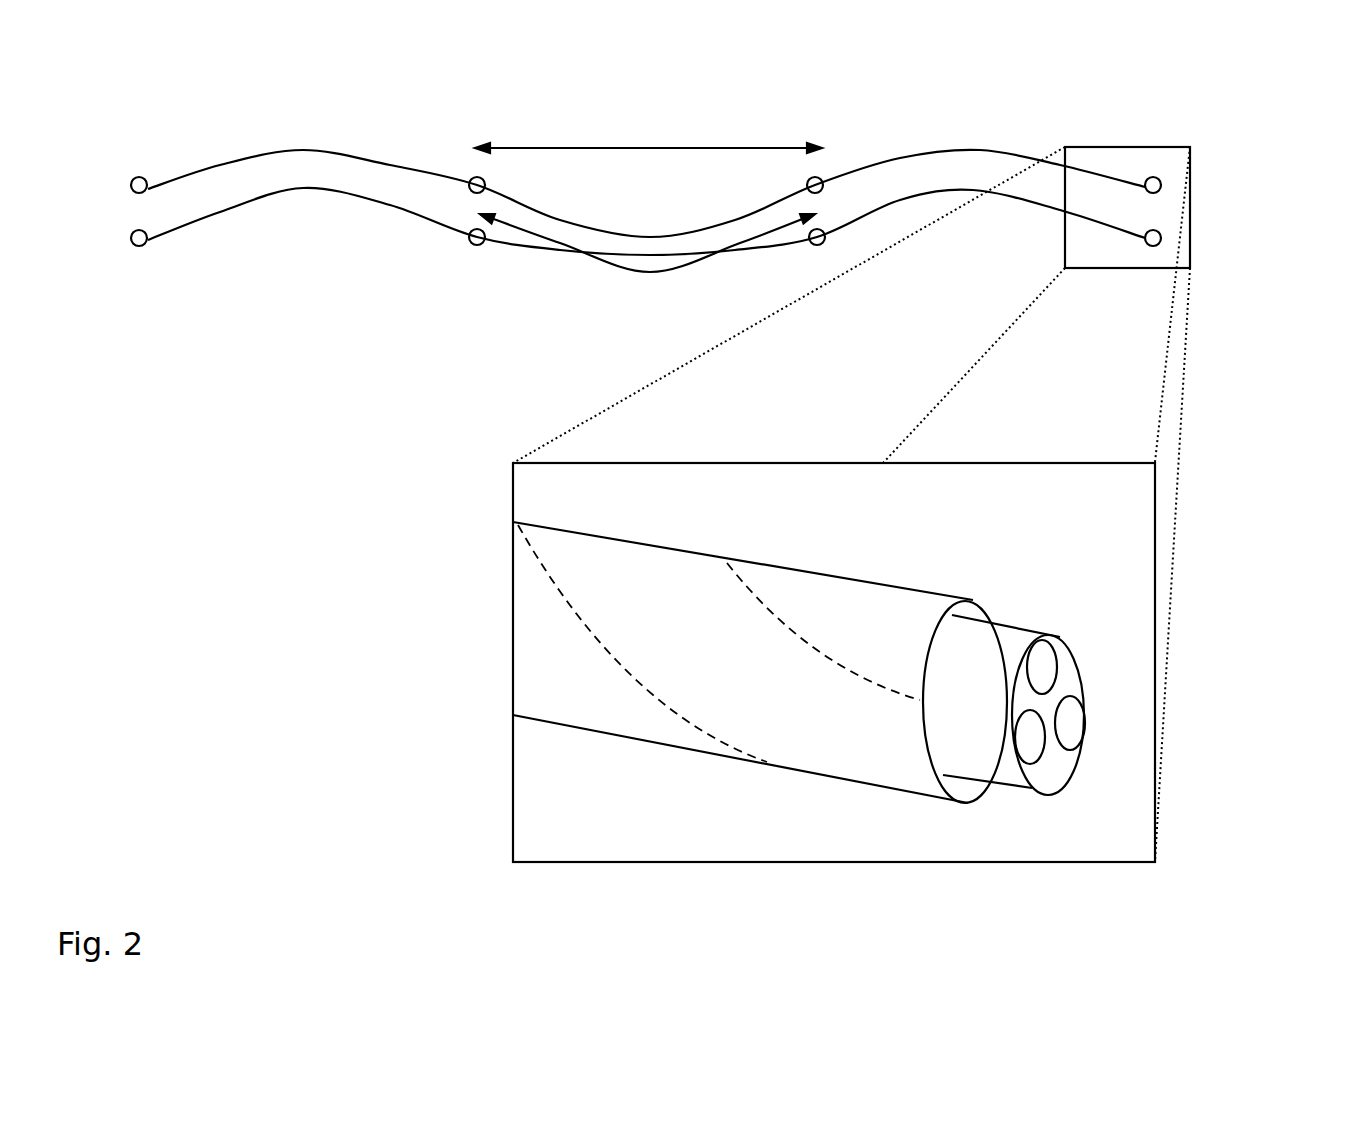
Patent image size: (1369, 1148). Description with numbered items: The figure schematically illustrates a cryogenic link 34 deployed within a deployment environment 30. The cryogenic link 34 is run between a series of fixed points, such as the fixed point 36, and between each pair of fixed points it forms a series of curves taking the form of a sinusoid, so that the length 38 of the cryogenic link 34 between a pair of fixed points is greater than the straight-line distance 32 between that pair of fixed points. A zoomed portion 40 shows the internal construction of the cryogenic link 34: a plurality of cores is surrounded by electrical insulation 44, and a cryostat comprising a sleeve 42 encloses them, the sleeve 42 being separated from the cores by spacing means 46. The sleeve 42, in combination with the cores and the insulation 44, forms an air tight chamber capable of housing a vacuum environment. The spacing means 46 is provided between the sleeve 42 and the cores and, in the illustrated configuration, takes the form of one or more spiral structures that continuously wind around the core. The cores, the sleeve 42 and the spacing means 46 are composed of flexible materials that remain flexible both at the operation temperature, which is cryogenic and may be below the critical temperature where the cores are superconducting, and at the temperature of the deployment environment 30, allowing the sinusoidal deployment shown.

The deployment environment 30 is at (1152, 78).
The distance 32 is at (660, 145).
The cryogenic link 34 is at (315, 150).
The fixed point 36 is at (820, 178).
The length 38 is at (540, 235).
The zoomed portion 40 is at (1157, 528).
The sleeve 42 is at (927, 592).
The electrical insulation 44 is at (1015, 627).
The spacing means 46 is at (923, 700).